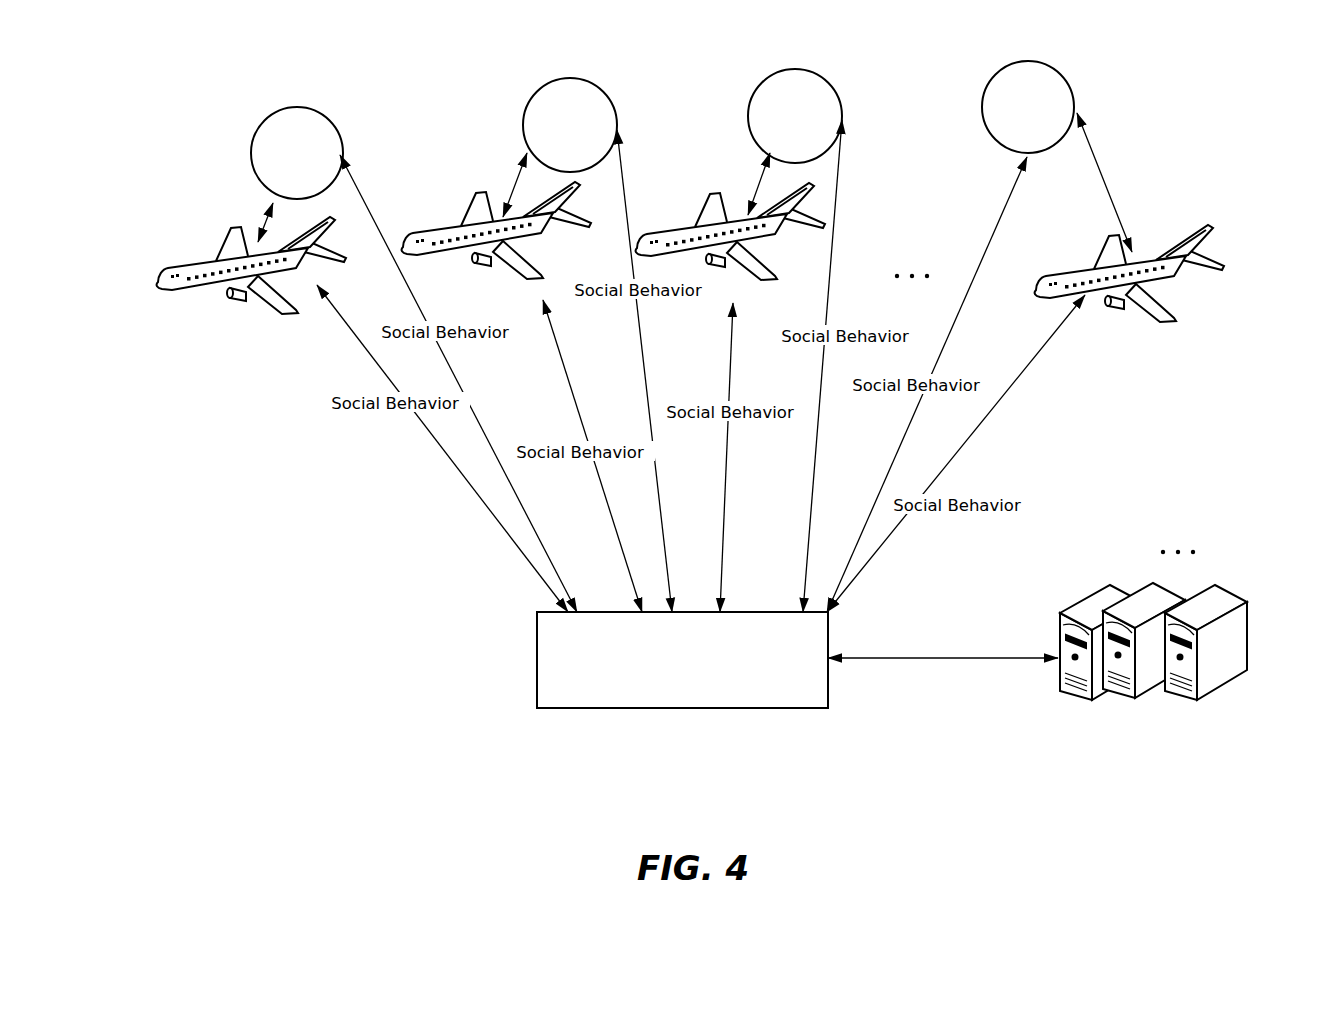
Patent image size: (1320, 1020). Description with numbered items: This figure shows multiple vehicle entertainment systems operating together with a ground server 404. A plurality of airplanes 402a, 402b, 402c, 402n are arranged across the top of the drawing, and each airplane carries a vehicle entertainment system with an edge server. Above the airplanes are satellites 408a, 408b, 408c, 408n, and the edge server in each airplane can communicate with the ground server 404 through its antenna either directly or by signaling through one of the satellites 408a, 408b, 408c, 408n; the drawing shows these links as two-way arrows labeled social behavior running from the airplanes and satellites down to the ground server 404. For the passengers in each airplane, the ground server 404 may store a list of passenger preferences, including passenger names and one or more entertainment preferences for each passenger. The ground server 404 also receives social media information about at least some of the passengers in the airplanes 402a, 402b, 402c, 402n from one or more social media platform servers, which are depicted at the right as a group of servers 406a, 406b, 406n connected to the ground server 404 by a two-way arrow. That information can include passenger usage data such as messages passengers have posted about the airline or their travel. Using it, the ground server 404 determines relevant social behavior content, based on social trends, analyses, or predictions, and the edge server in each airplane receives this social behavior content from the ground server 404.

The airplane 402a is at (189, 257).
The airplane 402b is at (428, 222).
The airplane 402c is at (677, 224).
The airplane 402n is at (1055, 266).
The ground server 404 is at (537, 658).
The server 406a is at (1066, 610).
The server 406b is at (1136, 596).
The server 406n is at (1196, 596).
The satellite 408a is at (279, 108).
The satellite 408b is at (606, 102).
The satellite 408c is at (834, 104).
The satellite 408n is at (1074, 102).